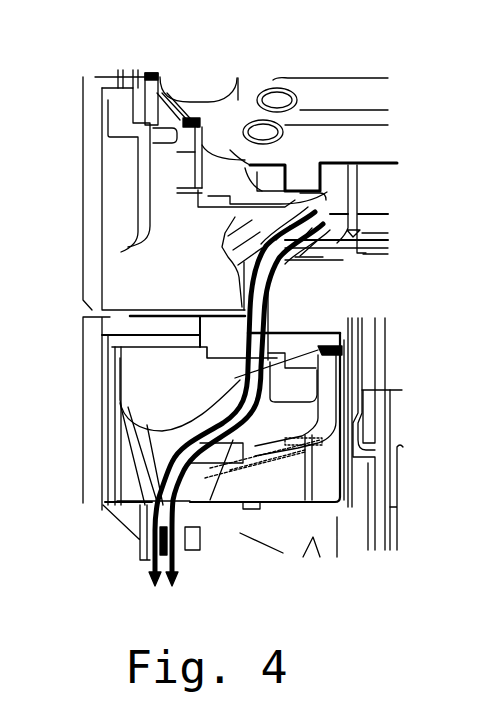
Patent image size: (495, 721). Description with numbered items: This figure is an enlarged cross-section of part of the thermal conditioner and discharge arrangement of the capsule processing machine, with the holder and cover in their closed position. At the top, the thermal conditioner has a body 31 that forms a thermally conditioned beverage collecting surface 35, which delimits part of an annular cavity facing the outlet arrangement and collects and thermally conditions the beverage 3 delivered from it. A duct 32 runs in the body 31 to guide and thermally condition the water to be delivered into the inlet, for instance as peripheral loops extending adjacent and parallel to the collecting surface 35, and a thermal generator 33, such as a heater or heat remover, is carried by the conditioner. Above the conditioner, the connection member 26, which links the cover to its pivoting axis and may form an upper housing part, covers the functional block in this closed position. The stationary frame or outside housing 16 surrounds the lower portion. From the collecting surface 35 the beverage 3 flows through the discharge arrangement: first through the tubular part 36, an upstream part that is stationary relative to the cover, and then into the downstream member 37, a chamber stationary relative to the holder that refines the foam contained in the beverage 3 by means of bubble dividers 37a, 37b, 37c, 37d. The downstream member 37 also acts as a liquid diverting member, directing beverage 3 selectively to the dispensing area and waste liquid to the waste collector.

The beverage 3 is at (153, 566).
The frame or outside housing 16 is at (93, 367).
The connection member 26 is at (88, 240).
The body 31 is at (337, 90).
The duct 32 is at (273, 100).
The thermal generator 33 is at (185, 87).
The beverage collecting surface 35 is at (322, 183).
The tubular part 36 is at (275, 283).
The downstream member 37 is at (283, 450).
The bubble divider 37a is at (342, 348).
The bubble divider 37b is at (243, 450).
The bubble divider 37c is at (200, 445).
The bubble divider 37d is at (172, 547).